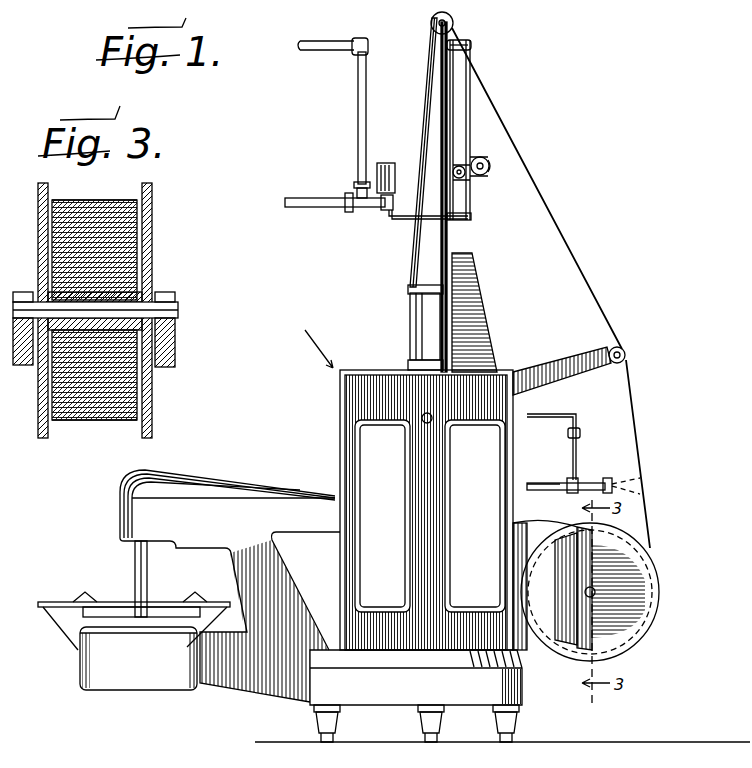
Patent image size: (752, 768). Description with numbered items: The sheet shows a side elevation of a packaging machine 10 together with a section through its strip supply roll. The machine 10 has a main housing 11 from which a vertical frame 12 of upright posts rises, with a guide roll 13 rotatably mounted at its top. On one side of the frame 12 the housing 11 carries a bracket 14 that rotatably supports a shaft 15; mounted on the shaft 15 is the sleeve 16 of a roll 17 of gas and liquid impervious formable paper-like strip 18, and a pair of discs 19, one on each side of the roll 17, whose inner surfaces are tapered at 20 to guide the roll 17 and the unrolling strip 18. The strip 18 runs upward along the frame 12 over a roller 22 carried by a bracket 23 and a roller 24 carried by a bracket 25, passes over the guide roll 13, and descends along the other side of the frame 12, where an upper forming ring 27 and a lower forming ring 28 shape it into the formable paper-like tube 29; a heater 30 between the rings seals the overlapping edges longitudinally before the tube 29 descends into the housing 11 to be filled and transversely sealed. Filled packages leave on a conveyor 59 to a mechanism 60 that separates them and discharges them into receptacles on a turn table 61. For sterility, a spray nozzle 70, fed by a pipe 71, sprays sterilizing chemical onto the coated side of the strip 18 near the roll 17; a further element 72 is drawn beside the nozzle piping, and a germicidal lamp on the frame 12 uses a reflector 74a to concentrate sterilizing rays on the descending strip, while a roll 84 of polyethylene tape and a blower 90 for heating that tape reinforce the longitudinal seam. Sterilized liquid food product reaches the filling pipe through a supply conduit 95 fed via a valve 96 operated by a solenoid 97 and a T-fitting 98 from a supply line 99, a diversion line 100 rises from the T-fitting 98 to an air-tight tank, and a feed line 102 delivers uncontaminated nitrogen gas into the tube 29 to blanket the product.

In FIG. 1, the packaging machine 10 is at (316, 339).
In FIG. 1, the main housing 11 is at (352, 407).
In FIG. 1, the vertical frame 12 is at (450, 243).
In FIG. 1, the guide roll 13 is at (431, 24).
In FIG. 1, the bracket 14 is at (530, 527).
In FIG. 3, the bracket 14 is at (175, 350).
In FIG. 1, the shaft 15 is at (596, 590).
In FIG. 3, the shaft 15 is at (180, 310).
In FIG. 1, the sleeve 16 is at (600, 588).
In FIG. 3, the sleeve 16 is at (137, 276).
In FIG. 1, the roll 17 is at (633, 648).
In FIG. 3, the roll 17 is at (135, 231).
In FIG. 1, the strip 18 is at (425, 80).
In FIG. 1, the discs 19 is at (660, 600).
In FIG. 3, the discs 19 is at (152, 385).
In FIG. 3, the tapered inner surfaces 20 is at (137, 413).
In FIG. 1, the roller 22 is at (622, 348).
In FIG. 1, the bracket 23 is at (530, 372).
In FIG. 1, the roller 24 is at (472, 44).
In FIG. 1, the bracket 25 is at (452, 32).
In FIG. 1, the upper forming ring 27 is at (407, 287).
In FIG. 1, the lower forming ring 28 is at (407, 366).
In FIG. 1, the formable paper like tube 29 is at (417, 318).
In FIG. 1, the heater 30 is at (468, 320).
In FIG. 1, the conveyor 59 is at (280, 585).
In FIG. 1, the separating mechanism 60 is at (120, 514).
In FIG. 1, the turn table 61 is at (108, 598).
In FIG. 1, the spray nozzle 70 is at (580, 483).
In FIG. 1, the pipe 71 is at (541, 483).
In FIG. 1, the pipe 72 is at (582, 433).
In FIG. 1, the reflector 74a is at (461, 123).
In FIG. 1, the roll of polyethylene tape 84 is at (492, 171).
In FIG. 1, the blower 90 is at (462, 178).
In FIG. 1, the supply conduit 95 is at (390, 223).
In FIG. 1, the valve 96 is at (392, 203).
In FIG. 1, the solenoid 97 is at (388, 162).
In FIG. 1, the T-fitting 98 is at (348, 212).
In FIG. 1, the supply line 99 is at (298, 198).
In FIG. 1, the diversion line 100 is at (356, 135).
In FIG. 1, the feed line 102 is at (433, 414).